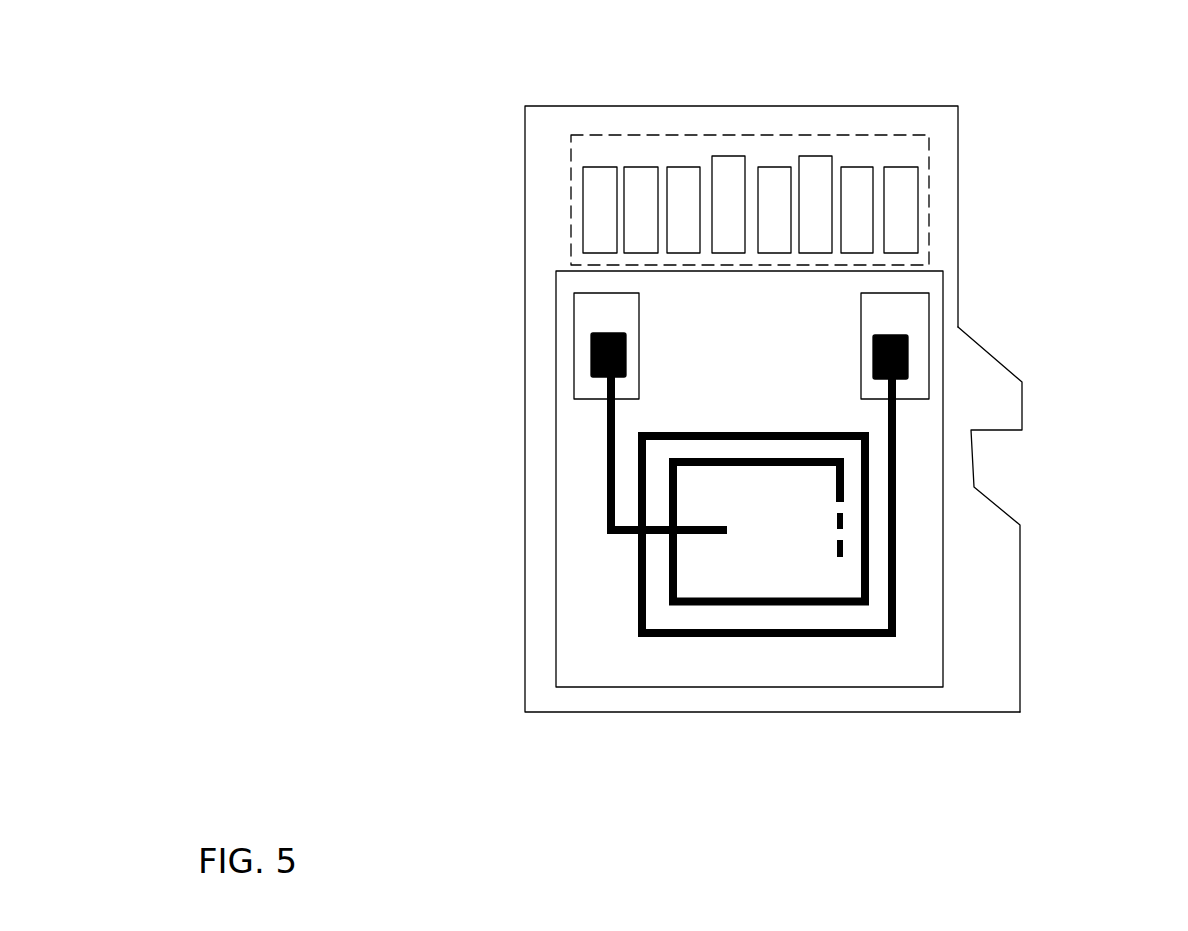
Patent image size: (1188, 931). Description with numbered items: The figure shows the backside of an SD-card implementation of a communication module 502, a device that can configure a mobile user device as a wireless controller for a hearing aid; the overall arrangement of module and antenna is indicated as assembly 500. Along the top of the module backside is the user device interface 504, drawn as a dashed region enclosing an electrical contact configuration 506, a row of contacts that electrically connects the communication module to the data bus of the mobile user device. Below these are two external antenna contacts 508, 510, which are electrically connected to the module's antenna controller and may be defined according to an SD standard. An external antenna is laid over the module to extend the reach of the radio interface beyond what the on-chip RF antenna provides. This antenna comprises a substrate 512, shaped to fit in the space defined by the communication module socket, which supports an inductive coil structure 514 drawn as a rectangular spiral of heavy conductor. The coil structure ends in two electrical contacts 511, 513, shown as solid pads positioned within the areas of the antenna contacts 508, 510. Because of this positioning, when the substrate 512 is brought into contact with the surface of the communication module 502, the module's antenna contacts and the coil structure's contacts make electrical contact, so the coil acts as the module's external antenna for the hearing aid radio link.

The card / module 500 is at (998, 157).
The communication module 502 is at (1015, 603).
The user device interface 504 is at (603, 135).
The electrical contact configuration 506 is at (811, 172).
The external antenna contact 508 is at (592, 318).
The external antenna contact 510 is at (914, 325).
The electrical contact of the inductive coil structure 511 is at (590, 357).
The substrate 512 is at (875, 673).
The electrical contact of the inductive coil structure 513 is at (906, 360).
The inductive coil structure 514 is at (607, 492).